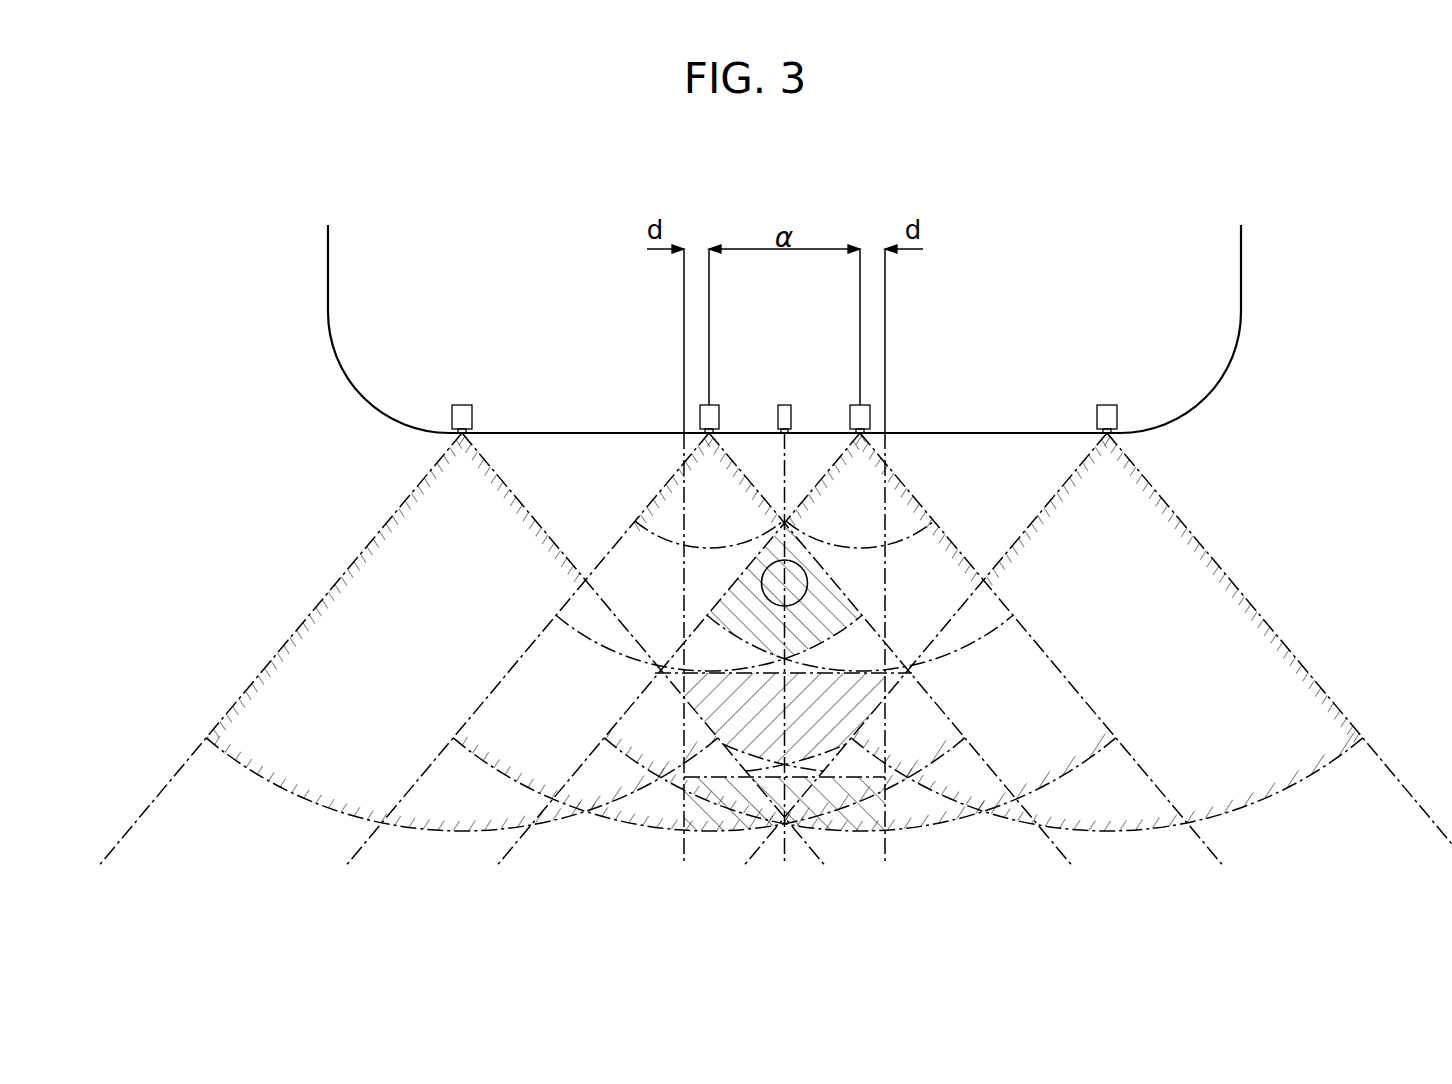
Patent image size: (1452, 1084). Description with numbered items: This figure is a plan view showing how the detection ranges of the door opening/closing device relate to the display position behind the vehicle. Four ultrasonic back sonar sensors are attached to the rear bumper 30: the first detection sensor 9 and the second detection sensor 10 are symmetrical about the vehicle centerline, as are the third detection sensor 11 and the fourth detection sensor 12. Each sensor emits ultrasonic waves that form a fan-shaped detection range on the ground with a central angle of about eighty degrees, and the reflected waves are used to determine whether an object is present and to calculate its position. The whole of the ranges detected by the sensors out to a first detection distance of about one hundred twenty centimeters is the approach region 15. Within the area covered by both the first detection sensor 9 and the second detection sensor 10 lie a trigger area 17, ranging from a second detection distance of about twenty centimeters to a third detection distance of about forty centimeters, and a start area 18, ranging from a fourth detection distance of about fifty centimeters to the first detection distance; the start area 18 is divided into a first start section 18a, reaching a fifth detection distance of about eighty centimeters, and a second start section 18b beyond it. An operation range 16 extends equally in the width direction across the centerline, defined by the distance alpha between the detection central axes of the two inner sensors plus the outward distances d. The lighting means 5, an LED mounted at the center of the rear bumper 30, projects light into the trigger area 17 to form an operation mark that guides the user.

The rear bumper 30 is at (352, 311).
The third detection sensor 11 is at (466, 414).
The first detection sensor 9 is at (707, 413).
The lighting means 5 is at (782, 404).
The second detection sensor 10 is at (862, 412).
The fourth detection sensor 12 is at (1107, 405).
The approach region 15 is at (1237, 586).
The operation range 16 is at (885, 858).
The trigger area 17 is at (737, 606).
The start area 18 is at (747, 795).
The first start section 18a is at (713, 715).
The second start section 18b is at (822, 798).